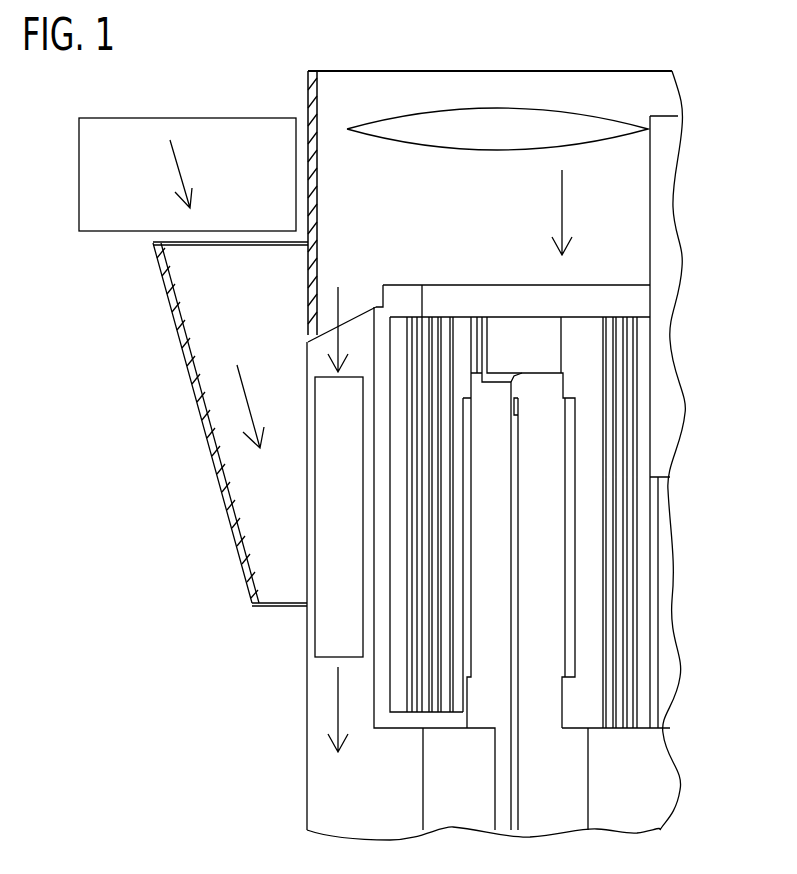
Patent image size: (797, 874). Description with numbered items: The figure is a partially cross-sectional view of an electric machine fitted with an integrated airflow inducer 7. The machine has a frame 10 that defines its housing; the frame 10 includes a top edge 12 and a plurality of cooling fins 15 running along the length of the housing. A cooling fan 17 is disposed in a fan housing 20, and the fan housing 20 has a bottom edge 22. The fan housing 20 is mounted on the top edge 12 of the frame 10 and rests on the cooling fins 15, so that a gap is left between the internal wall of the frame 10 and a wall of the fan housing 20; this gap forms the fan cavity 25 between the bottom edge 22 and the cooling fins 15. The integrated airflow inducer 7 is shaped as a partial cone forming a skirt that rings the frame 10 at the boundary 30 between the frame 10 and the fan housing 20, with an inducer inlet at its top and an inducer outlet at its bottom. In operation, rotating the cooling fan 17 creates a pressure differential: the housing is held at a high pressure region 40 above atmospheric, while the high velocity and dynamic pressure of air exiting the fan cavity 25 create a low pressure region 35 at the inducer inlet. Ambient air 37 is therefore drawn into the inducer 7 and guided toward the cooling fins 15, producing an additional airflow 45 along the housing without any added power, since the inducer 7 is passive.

The integrated airflow inducer 7 is at (220, 482).
The frame 10 is at (307, 748).
The top edge 12 is at (457, 285).
The plurality of cooling fins 15 is at (617, 582).
The cooling fan 17 is at (451, 150).
The fan housing 20 is at (575, 71).
The bottom edge 22 is at (353, 318).
The fan cavity 25 is at (562, 210).
The boundary 30 is at (279, 340).
The low pressure region 35 is at (190, 118).
The ambient air 37 is at (176, 168).
The high pressure region 40 is at (335, 500).
The additional airflow 45 is at (245, 403).